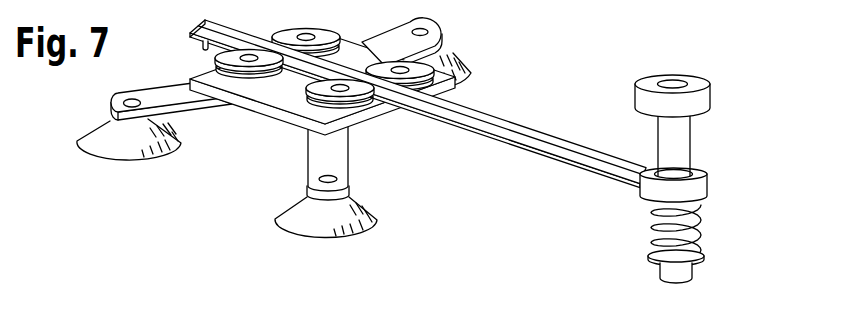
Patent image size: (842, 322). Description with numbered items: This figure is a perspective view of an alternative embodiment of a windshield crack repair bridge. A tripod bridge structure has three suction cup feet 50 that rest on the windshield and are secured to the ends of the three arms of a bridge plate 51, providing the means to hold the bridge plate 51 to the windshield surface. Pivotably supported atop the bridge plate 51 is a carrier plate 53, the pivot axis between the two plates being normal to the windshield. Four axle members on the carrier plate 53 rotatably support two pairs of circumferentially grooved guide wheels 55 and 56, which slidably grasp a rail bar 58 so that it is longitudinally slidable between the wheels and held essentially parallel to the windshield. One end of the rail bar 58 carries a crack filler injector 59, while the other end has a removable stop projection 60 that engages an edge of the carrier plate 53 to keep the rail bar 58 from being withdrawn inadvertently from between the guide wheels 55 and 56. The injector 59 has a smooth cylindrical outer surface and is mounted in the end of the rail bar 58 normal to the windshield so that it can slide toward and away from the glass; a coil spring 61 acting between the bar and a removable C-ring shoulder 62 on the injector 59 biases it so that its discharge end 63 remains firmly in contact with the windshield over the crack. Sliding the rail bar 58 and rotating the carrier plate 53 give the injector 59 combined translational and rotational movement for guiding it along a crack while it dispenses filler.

The suction cup feet 50 is at (100, 143).
The bridge plate 51 is at (175, 110).
The carrier plate 53 is at (367, 113).
The guide wheels 55 is at (313, 100).
The guide wheels 56 is at (383, 67).
The rail bar 58 is at (482, 125).
The crack filler injector 59 is at (676, 147).
The stop projection 60 is at (200, 47).
The coil spring 61 is at (652, 222).
The C-ring shoulder 62 is at (650, 258).
The discharge end 63 is at (677, 282).